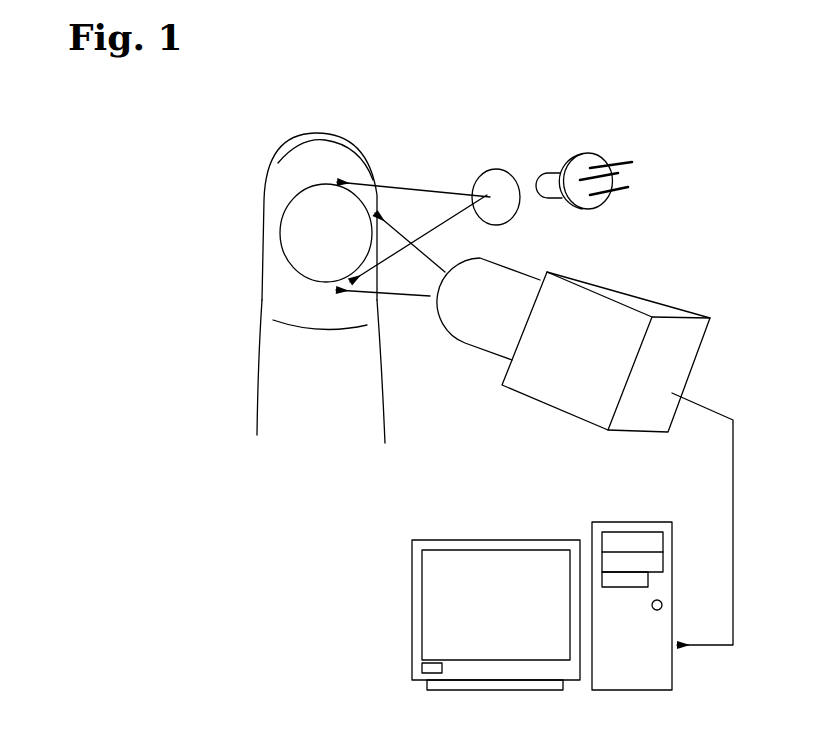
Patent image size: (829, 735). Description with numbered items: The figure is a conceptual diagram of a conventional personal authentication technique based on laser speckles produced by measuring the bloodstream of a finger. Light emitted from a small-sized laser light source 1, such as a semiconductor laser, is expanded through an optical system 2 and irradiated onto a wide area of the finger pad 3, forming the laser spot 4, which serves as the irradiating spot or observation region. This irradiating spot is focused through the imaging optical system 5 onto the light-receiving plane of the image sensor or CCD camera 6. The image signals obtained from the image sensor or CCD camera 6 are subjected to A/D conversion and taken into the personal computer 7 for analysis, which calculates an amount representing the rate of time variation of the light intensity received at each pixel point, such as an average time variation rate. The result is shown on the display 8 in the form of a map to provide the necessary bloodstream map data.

The small-sized laser light source 1 is at (589, 154).
The optical system 2 is at (493, 176).
The finger pad 3 is at (347, 165).
The laser spot 4 is at (353, 217).
The imaging optical system 5 is at (508, 282).
The image sensor or CCD camera 6 is at (623, 288).
The personal computer for analysis 7 is at (663, 520).
The display 8 is at (547, 538).